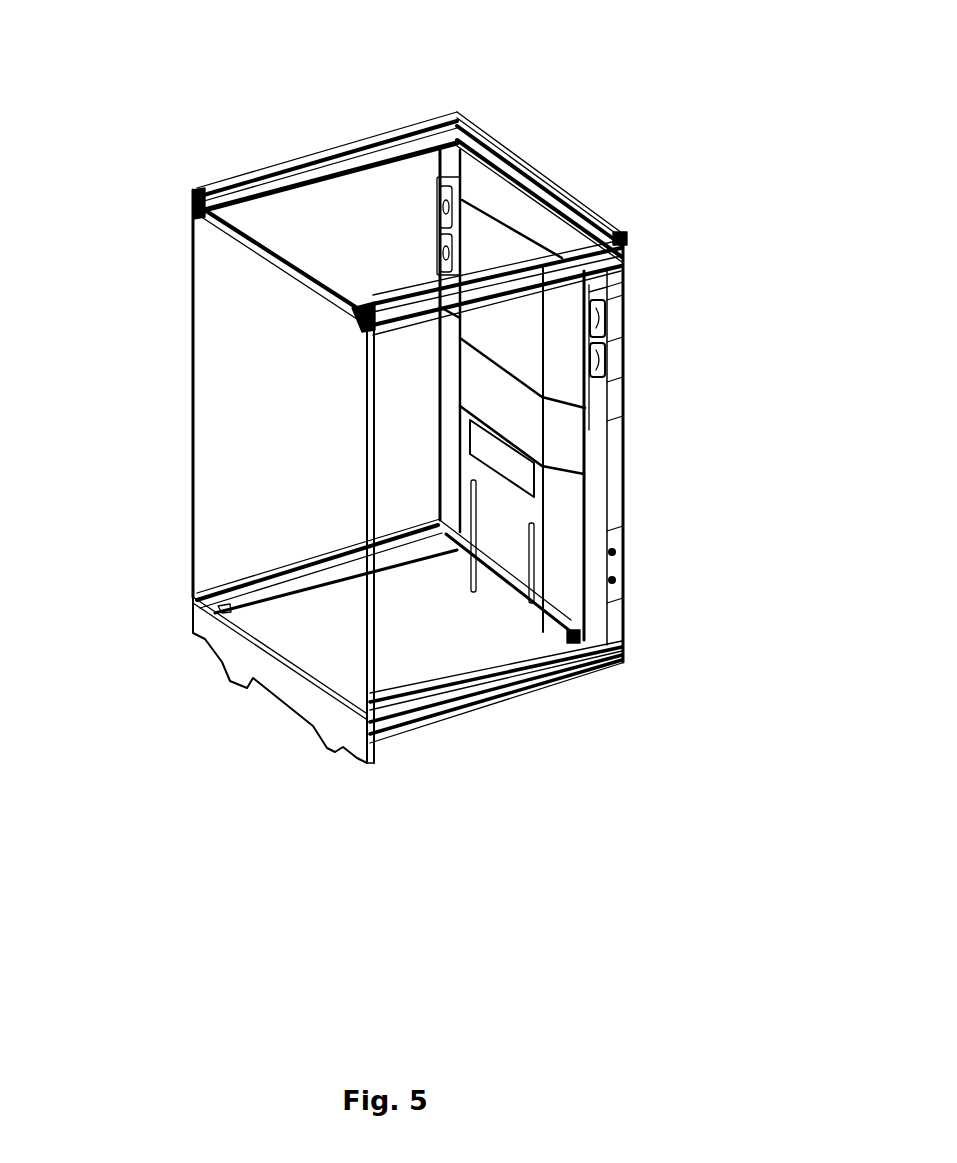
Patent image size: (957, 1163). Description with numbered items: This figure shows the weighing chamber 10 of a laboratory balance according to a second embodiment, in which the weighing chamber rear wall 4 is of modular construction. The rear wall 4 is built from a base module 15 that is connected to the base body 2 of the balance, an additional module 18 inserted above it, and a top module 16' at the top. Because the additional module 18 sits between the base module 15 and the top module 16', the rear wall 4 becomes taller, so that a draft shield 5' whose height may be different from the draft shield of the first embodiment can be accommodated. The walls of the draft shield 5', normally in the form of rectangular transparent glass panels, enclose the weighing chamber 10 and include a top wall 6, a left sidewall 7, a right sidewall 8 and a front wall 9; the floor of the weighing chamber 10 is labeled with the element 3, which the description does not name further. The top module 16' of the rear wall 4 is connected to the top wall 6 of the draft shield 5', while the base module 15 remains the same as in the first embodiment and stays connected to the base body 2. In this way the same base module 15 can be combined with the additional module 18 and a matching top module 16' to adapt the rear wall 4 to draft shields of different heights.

The base body 2 is at (530, 693).
The floor plate 3 is at (421, 640).
The weighing chamber rear wall 4 is at (620, 237).
The draft shield 5' is at (318, 117).
The top wall 6 is at (383, 217).
The left sidewall 7 is at (296, 372).
The right sidewall 8 is at (407, 483).
The front wall 9 is at (236, 660).
The weighing chamber 10 is at (322, 424).
The base module 15 is at (547, 530).
The top module 16' is at (588, 168).
The additional module 18 is at (543, 358).